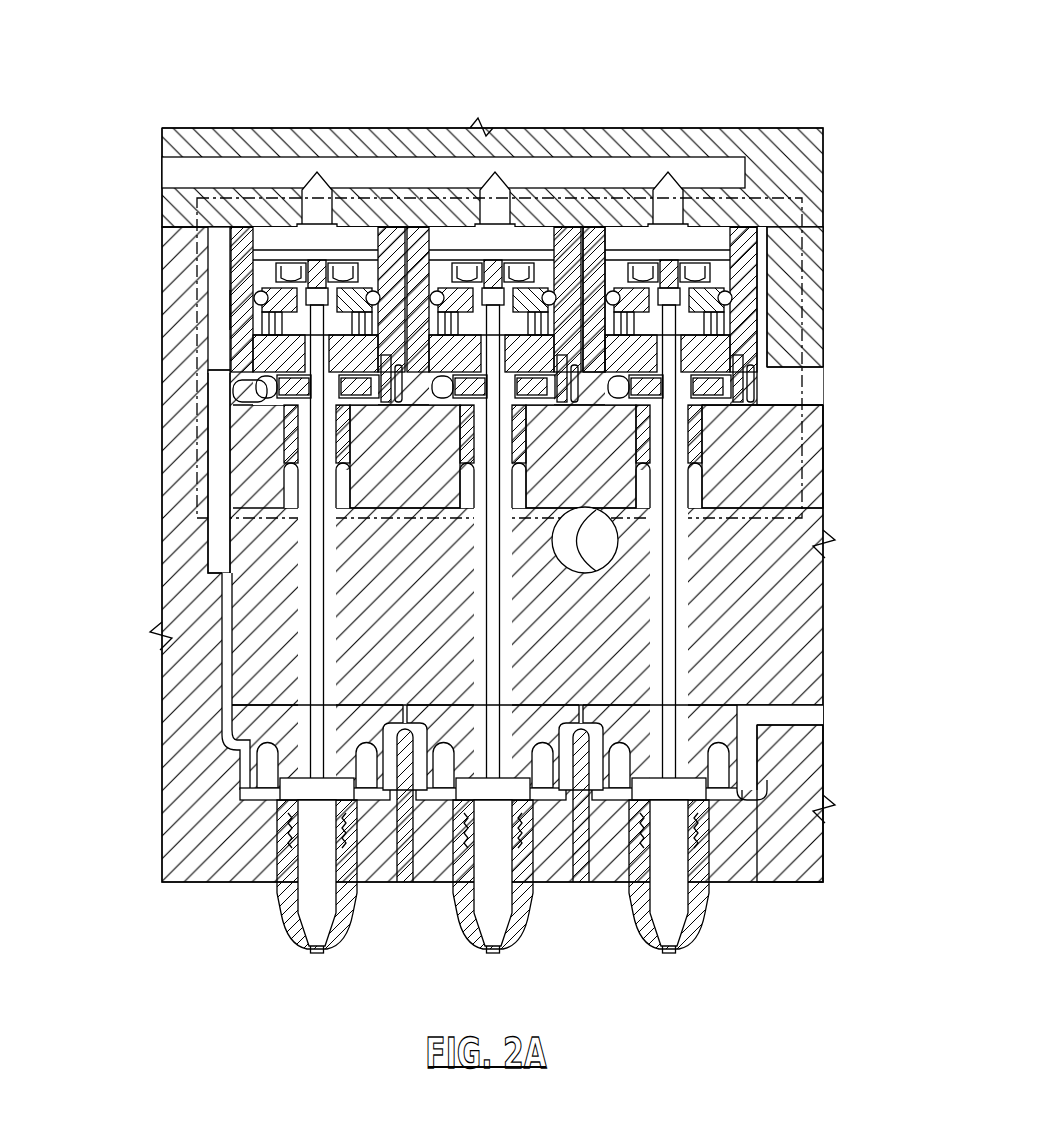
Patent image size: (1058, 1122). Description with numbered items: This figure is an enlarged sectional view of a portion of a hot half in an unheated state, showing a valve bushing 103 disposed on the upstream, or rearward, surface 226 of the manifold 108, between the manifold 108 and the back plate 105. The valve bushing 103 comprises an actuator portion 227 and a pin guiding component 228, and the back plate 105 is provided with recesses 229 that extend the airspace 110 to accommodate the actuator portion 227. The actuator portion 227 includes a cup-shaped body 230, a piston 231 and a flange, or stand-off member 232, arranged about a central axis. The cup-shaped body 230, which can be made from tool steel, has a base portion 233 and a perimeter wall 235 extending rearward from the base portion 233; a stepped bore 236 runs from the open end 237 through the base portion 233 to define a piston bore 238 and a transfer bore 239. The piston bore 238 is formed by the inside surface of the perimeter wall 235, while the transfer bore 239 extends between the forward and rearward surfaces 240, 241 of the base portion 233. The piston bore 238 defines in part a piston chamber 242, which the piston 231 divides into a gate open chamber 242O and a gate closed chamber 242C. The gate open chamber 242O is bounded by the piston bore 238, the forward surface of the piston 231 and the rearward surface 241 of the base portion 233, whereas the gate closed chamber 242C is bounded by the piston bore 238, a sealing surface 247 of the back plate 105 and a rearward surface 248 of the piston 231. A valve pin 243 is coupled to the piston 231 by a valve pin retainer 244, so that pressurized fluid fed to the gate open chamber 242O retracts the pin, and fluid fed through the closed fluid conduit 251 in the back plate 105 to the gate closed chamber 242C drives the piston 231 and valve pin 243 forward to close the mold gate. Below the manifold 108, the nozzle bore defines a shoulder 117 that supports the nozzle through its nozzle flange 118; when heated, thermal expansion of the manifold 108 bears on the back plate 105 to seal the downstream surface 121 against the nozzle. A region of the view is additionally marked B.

The valve bushing 103 is at (853, 386).
The back plate 105 is at (492, 134).
The manifold 108 is at (447, 500).
The airspace 110 is at (154, 580).
The shoulder 117 is at (834, 803).
The nozzle flange 118 is at (830, 767).
The downstream surface 121 is at (577, 746).
The rearward surface 226 is at (826, 429).
The actuator portion 227 is at (858, 297).
The pin guiding component 228 is at (804, 467).
The recesses 229 is at (141, 309).
The cup-shaped body 230 is at (141, 295).
The piston 231 is at (154, 270).
The stand-off member 232 is at (161, 376).
The base portion 233 is at (779, 349).
The perimeter wall 235 is at (835, 299).
The stepped bore 236 is at (373, 206).
The open end 237 is at (427, 206).
The piston bore 238 is at (491, 150).
The transfer bore 239 is at (766, 299).
The forward surface 240 is at (644, 444).
The rearward surface 241 is at (581, 454).
The piston chamber 242 is at (730, 167).
The gate closed chamber 242C is at (691, 188).
The gate open chamber 242O is at (766, 188).
The valve pin 243 is at (785, 629).
The valve pin retainer 244 is at (405, 456).
The sealing surface 247 is at (291, 150).
The rearward surface 248 is at (578, 206).
The closed fluid conduit 251 is at (479, 134).
The section detail B is at (441, 358).